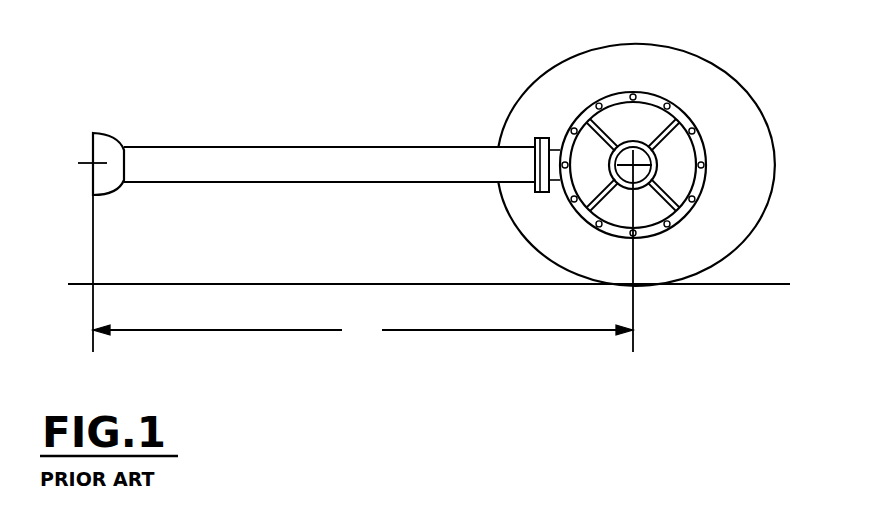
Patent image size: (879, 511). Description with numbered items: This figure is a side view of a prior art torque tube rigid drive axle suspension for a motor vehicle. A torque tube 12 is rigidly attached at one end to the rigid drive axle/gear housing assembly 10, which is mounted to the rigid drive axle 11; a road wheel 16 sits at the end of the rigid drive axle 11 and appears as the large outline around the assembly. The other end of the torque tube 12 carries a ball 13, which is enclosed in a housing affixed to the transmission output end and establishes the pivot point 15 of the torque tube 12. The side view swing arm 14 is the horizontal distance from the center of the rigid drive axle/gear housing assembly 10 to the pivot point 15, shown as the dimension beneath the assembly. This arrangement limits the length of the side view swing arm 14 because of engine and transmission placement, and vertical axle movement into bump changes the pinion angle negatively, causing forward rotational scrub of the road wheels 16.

The rigid drive axle/gear housing assembly 10 is at (661, 93).
The rigid drive axle 11 is at (652, 172).
The torque tube 12 is at (332, 175).
The ball 13 is at (103, 134).
The side view swing arm 14 is at (363, 331).
The pivot point 15 is at (92, 166).
The road wheels 16 is at (547, 73).